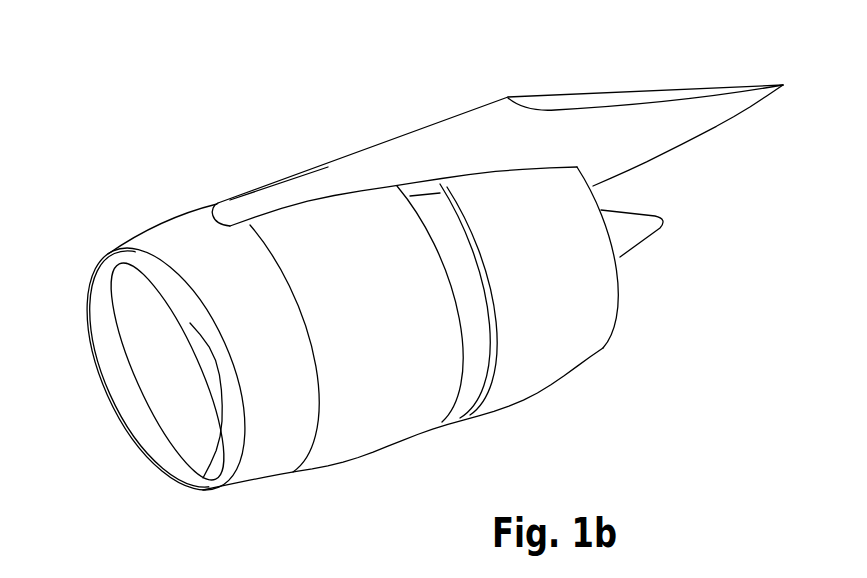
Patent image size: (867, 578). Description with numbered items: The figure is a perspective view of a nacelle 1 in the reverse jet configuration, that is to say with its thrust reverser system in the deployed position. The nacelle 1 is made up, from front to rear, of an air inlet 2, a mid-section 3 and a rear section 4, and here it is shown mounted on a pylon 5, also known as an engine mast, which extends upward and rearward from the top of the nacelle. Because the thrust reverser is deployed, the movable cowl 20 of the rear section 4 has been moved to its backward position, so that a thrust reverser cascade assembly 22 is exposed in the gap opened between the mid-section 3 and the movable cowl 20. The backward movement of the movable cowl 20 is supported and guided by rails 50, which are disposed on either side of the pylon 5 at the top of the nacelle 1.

The nacelle 1 is at (372, 320).
The air inlet 2 is at (147, 252).
The mid-section 3 is at (391, 470).
The rear section 4 is at (586, 389).
The pylon 5 is at (657, 130).
The movable cowl 20 is at (583, 327).
The thrust reverser cascade assembly 22 is at (470, 367).
The rails 50 is at (420, 180).